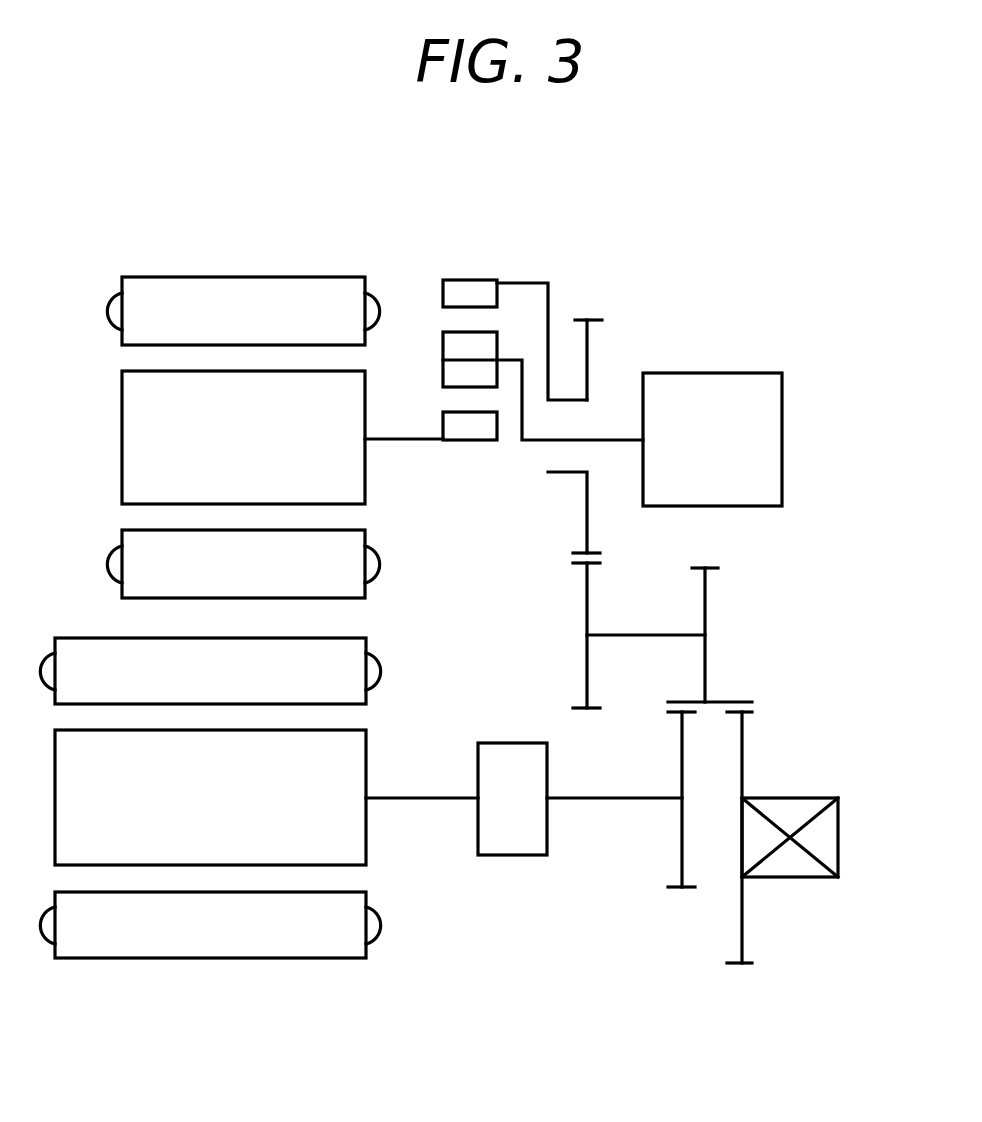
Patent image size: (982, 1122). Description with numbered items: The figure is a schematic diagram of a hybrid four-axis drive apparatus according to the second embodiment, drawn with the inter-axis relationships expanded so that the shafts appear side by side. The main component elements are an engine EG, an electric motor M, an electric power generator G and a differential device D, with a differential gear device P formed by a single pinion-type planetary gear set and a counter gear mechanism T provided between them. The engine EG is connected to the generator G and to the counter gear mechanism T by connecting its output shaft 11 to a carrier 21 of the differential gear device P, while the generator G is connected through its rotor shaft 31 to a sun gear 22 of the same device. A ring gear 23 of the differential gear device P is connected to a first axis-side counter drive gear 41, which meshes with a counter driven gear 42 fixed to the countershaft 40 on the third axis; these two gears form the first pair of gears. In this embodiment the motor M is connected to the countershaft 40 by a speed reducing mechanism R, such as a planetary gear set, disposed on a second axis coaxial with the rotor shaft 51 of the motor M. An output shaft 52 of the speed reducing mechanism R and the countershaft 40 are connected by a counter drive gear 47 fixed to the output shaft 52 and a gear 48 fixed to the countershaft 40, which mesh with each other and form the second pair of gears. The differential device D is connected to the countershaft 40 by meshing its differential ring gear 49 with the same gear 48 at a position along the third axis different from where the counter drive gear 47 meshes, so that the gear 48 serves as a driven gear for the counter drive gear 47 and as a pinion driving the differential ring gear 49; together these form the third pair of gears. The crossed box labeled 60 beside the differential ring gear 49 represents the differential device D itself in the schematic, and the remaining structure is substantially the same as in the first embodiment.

The output shaft 11 is at (601, 439).
The carrier 21 is at (509, 357).
The sun gear 22 is at (467, 441).
The ring gear 23 is at (484, 279).
The rotor shaft 31 is at (406, 441).
The countershaft 40 is at (645, 634).
The counter drive gear 41 is at (588, 356).
The counter driven gear 42 is at (583, 579).
The counter drive gear 47 is at (681, 759).
The gear 48 is at (706, 603).
The differential ring gear 49 is at (740, 908).
The rotor shaft 51 is at (416, 797).
The output shaft 52 is at (621, 799).
The differential gear 60 is at (790, 878).
The generator G is at (250, 262).
The motor M is at (102, 619).
The differential gear device P is at (435, 265).
The counter gear mechanism T is at (712, 635).
The differential device D is at (781, 777).
The speed reducing mechanism R is at (512, 799).
The engine EG is at (712, 439).